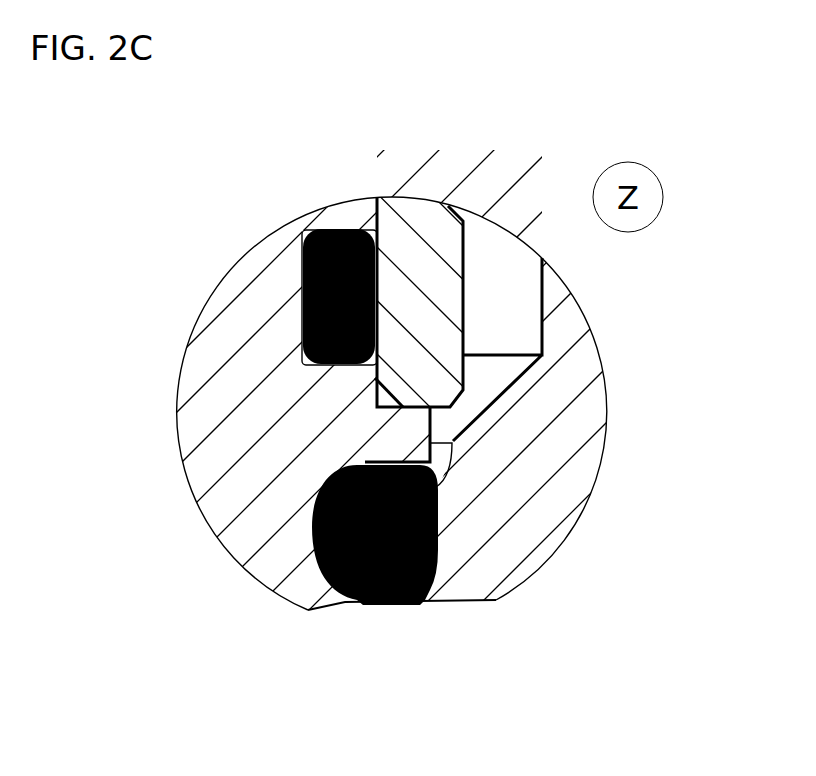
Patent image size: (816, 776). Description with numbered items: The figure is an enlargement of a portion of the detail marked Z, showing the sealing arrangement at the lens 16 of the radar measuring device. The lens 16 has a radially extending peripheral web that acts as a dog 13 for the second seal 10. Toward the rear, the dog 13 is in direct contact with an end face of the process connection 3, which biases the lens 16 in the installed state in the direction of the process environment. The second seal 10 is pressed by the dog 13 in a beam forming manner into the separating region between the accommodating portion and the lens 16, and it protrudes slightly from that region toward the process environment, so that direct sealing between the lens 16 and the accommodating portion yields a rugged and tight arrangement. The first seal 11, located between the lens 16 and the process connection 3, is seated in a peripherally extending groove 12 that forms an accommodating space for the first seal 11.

The process connection 3 is at (428, 370).
The second seal 10 is at (330, 575).
The first seal 11 is at (300, 343).
The groove 12 is at (315, 225).
The dog 13 is at (388, 445).
The lens 16 is at (277, 297).